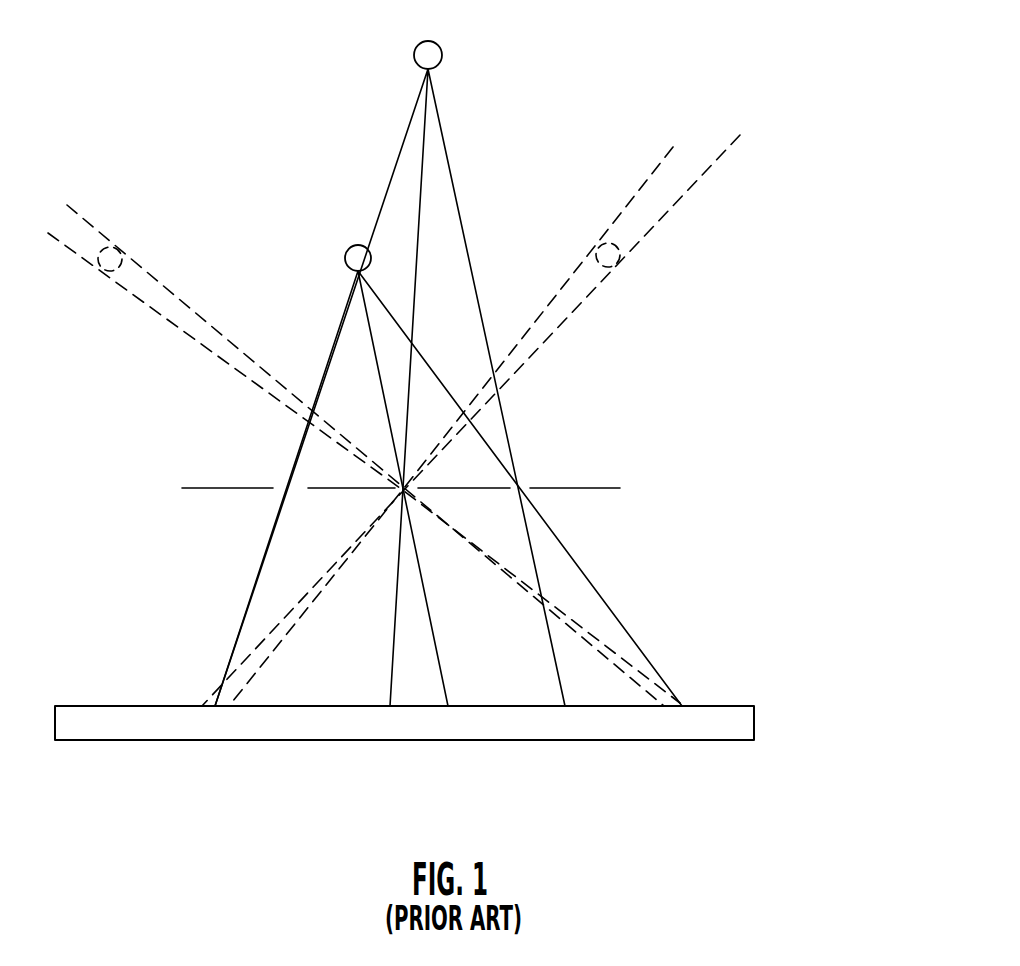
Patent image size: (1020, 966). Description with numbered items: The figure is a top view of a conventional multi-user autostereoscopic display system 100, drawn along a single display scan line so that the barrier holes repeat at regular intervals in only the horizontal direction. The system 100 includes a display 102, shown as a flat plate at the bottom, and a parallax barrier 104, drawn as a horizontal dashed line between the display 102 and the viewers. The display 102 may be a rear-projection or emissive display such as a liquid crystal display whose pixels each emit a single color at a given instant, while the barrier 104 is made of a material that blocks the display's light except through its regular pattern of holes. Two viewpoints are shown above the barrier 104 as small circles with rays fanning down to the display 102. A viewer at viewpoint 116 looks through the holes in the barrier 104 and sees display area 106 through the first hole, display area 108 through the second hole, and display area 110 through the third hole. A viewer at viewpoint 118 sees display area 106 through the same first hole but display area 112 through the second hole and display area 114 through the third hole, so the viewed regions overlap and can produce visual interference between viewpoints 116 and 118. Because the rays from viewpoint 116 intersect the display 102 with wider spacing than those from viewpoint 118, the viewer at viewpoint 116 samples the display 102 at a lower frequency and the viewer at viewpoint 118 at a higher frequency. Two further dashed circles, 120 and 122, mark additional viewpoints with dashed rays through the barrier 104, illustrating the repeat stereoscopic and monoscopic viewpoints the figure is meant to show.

The conventional AS display system 100 is at (199, 816).
The display 102 is at (775, 719).
The parallax barrier 104 is at (688, 496).
The display area 106 is at (213, 704).
The display area 108 is at (449, 704).
The display area 110 is at (683, 704).
The display area 112 is at (389, 704).
The display area 114 is at (564, 704).
The viewpoint 116 is at (345, 258).
The viewpoint 118 is at (442, 53).
The first virtual source position 120 is at (97, 258).
The second virtual source position 122 is at (621, 252).